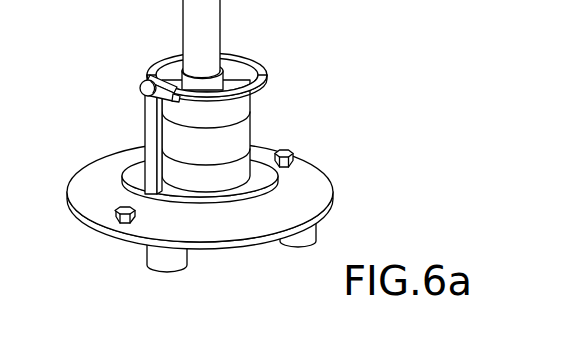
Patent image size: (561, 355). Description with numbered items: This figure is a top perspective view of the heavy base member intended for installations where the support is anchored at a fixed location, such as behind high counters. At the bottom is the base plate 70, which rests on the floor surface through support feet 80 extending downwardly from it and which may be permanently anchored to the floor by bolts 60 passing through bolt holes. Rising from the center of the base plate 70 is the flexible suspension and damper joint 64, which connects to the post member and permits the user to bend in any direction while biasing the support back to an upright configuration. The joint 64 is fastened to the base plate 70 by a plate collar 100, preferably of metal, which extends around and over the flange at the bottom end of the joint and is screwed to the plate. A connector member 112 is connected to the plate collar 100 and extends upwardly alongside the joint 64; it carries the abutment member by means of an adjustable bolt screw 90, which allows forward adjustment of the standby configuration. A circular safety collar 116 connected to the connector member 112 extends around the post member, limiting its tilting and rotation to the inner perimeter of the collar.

The circular safety collar 116 is at (247, 58).
The adjustable bolt screw 90 is at (143, 80).
The connector member 112 is at (146, 127).
The base plate 70 is at (92, 173).
The bolts 60 is at (286, 151).
The plate collar 100 is at (279, 178).
The support feet 80 is at (147, 256).
The flexible suspension and damper joint 64 is at (200, 182).